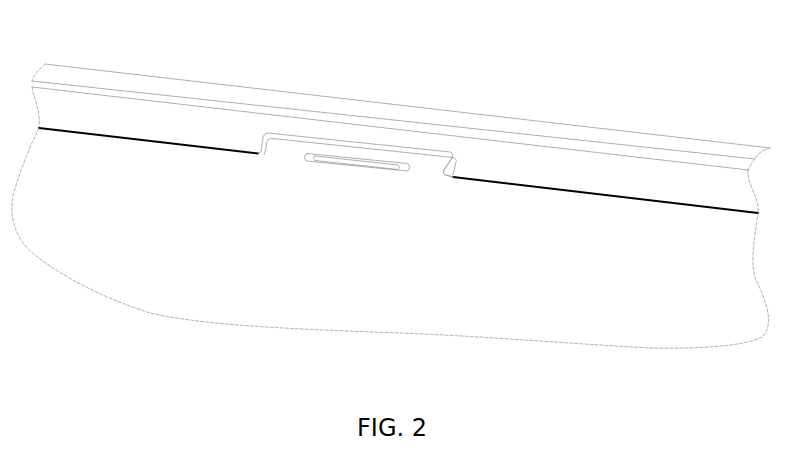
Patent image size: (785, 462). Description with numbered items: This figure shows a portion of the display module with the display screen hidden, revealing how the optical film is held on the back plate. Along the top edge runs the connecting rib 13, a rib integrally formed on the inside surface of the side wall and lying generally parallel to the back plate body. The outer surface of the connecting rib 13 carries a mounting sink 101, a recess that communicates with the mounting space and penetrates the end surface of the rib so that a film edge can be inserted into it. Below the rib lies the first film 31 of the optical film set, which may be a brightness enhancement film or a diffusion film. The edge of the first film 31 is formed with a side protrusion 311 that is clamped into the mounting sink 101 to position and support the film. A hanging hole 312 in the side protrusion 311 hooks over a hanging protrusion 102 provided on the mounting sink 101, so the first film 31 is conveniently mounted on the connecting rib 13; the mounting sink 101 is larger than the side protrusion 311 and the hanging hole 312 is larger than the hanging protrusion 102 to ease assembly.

The connecting rib 13 is at (678, 180).
The first film 31 is at (274, 300).
The side protrusion 311 is at (287, 146).
The hanging hole 312 is at (305, 153).
The mounting sink 101 is at (453, 174).
The hanging protrusion 102 is at (370, 162).